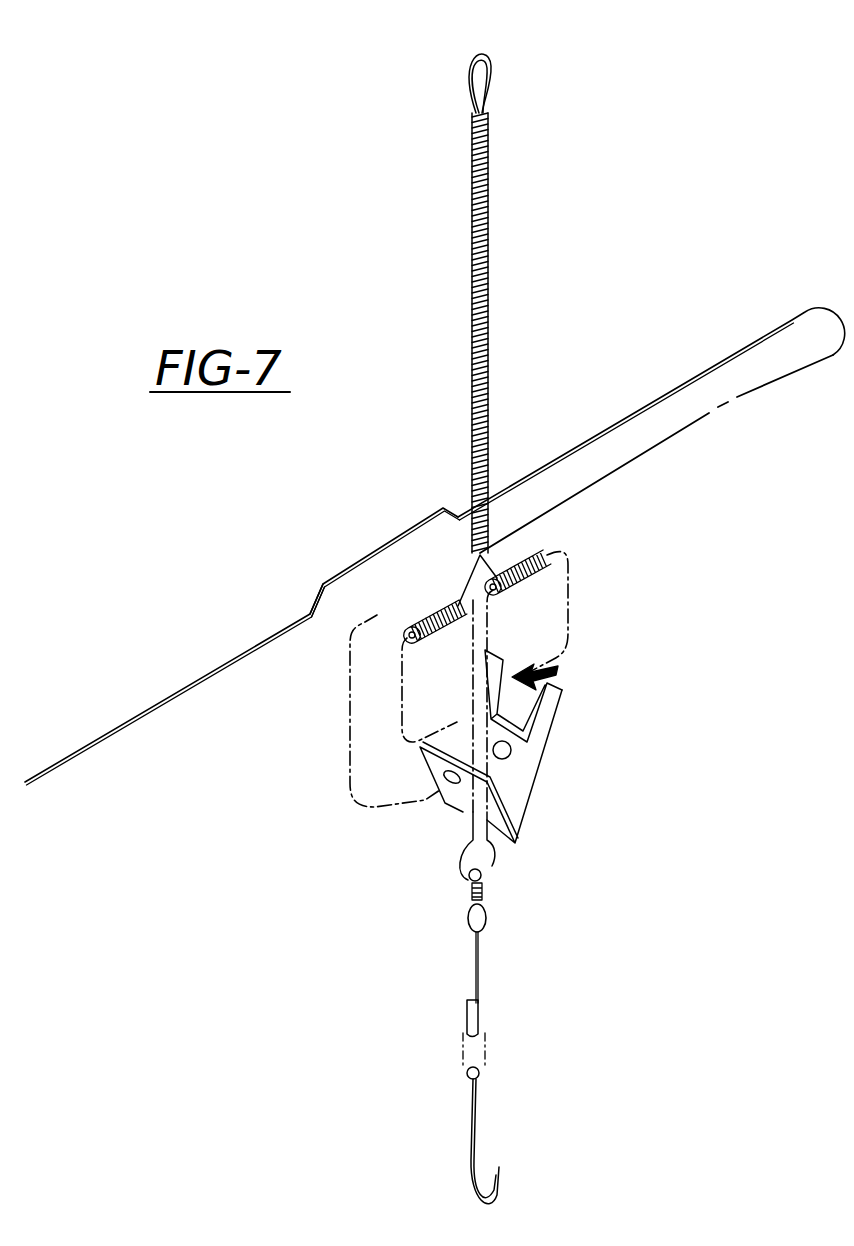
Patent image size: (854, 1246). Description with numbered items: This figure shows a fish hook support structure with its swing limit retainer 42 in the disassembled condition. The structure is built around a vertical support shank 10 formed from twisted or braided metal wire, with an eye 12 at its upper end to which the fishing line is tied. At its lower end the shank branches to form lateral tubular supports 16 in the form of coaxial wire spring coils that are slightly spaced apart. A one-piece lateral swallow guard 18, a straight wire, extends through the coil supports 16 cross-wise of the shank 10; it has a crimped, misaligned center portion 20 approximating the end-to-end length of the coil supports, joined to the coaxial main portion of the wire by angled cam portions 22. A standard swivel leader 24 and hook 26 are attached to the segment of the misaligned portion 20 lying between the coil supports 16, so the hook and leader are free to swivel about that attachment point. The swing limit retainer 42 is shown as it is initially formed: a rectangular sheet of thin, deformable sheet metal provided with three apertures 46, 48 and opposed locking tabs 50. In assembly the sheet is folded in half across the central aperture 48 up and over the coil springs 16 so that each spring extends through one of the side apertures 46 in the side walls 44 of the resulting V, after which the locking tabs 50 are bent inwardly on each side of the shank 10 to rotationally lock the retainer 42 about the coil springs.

The vertical support shank 10 is at (488, 275).
The eye 12 is at (495, 71).
The lateral tubular supports 16 is at (530, 553).
The lateral swallow guard 18 is at (648, 400).
The misaligned center portion 20 is at (342, 568).
The angled cam portions 22 is at (320, 585).
The swivel leader 24 is at (487, 914).
The hook 26 is at (477, 1135).
The swing limit retainer 42 is at (528, 842).
The side walls 44 is at (520, 797).
The side apertures 46 is at (520, 755).
The aperture 48 is at (462, 812).
The locking tabs 50 is at (565, 673).